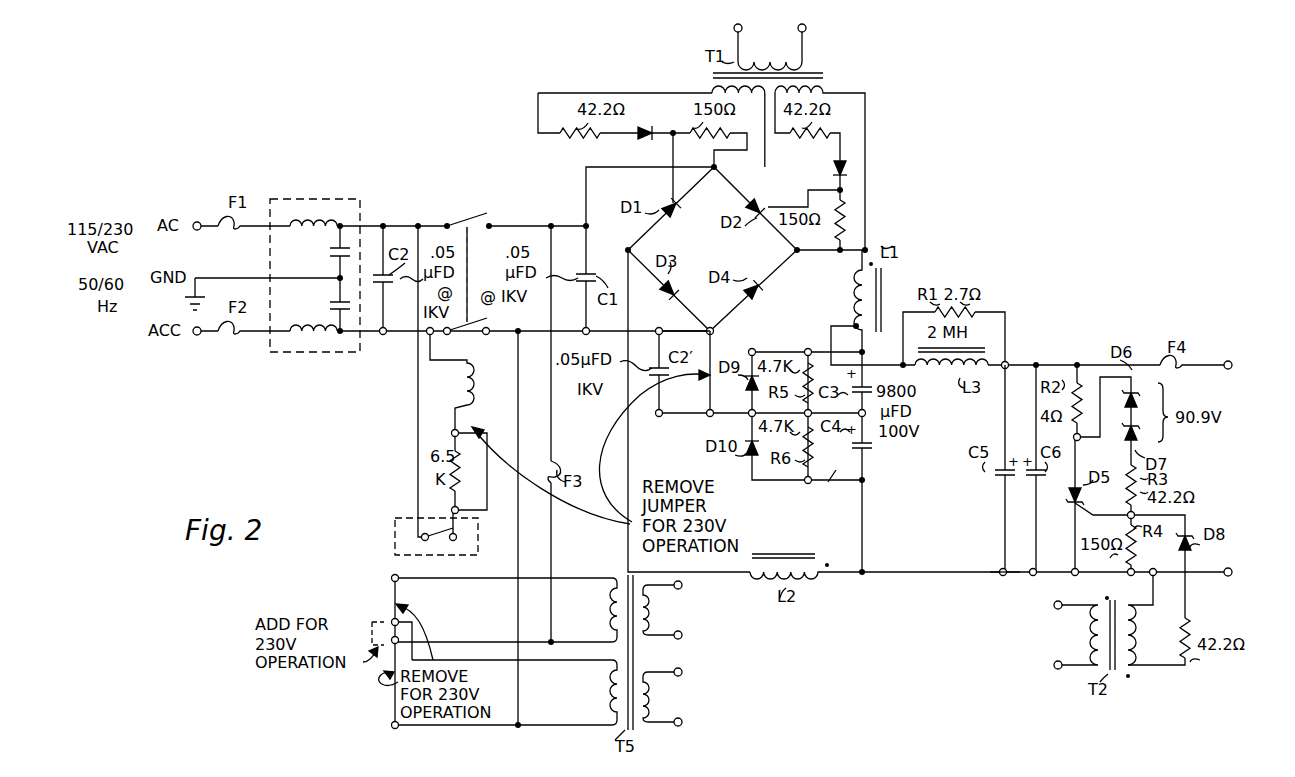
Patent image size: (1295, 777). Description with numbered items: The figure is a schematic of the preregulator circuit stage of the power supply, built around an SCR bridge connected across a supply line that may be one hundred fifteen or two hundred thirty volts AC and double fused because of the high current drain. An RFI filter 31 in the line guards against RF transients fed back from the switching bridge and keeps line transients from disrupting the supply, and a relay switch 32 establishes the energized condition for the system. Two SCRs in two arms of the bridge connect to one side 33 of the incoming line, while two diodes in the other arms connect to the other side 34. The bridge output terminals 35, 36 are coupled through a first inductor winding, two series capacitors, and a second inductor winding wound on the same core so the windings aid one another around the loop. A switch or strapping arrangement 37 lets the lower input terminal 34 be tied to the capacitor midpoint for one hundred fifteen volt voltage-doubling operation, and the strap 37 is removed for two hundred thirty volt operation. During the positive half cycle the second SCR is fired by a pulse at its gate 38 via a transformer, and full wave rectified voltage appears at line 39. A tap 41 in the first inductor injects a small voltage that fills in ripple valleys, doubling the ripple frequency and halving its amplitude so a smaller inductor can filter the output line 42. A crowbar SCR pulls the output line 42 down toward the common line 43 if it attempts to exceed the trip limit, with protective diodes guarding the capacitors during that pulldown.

The RFI filter 31 is at (364, 201).
The relay switch 32 is at (452, 390).
The one side of the incoming line 33 is at (632, 167).
The other side of the incoming line 34 is at (678, 330).
The output terminal of the bridge 35 is at (796, 251).
The output terminal of the bridge 36 is at (626, 258).
The switch or strapping arrangement 37 is at (708, 402).
The gate 38 is at (803, 203).
The output line 39 is at (874, 365).
The tap in the inductor L1 41 is at (852, 324).
The output line 42 is at (1022, 365).
The common line 43 is at (1021, 577).